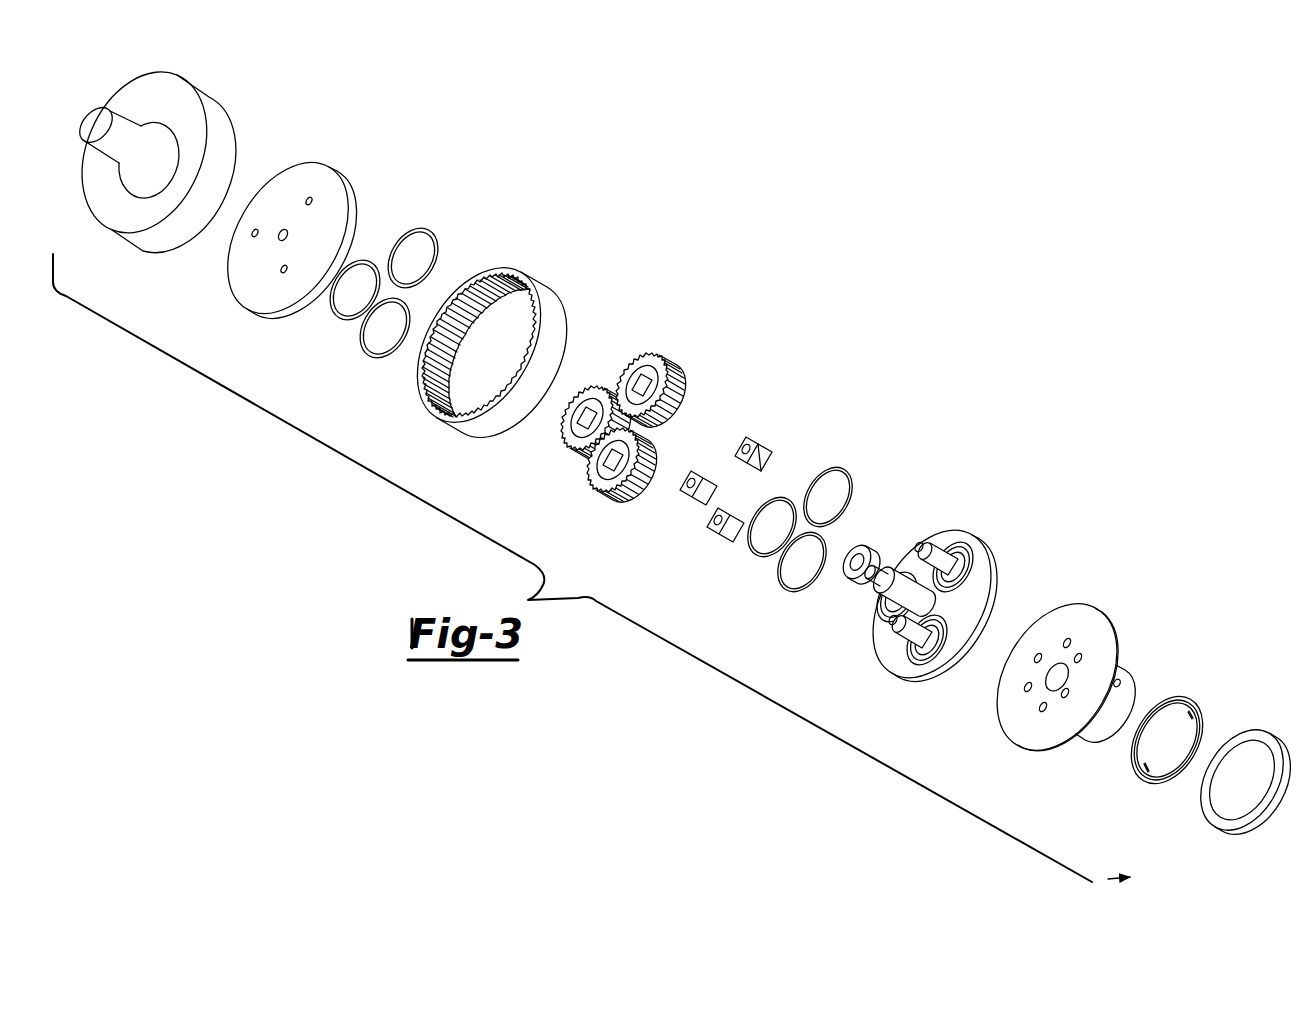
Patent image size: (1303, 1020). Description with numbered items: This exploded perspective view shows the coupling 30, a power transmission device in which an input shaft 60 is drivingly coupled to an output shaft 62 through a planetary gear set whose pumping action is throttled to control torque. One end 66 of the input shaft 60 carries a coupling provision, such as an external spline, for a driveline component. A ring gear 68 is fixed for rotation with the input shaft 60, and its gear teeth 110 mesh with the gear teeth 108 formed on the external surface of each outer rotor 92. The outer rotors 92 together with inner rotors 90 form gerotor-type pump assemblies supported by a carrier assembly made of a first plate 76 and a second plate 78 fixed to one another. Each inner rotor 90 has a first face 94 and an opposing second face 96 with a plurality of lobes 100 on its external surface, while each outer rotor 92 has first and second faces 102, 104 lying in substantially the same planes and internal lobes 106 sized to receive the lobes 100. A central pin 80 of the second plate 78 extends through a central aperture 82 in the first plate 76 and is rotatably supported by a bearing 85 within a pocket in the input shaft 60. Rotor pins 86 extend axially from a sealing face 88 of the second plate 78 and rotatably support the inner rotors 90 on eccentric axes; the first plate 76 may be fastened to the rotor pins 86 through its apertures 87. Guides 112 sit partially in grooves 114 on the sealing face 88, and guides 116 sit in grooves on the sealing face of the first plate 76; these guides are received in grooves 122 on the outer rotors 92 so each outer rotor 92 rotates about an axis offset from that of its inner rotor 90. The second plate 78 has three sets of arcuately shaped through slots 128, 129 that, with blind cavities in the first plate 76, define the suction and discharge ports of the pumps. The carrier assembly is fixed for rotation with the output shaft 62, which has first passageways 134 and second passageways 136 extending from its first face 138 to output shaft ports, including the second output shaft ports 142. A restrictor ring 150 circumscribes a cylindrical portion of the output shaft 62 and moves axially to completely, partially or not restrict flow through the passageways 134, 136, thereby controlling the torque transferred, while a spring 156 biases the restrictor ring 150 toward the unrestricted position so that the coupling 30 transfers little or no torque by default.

The coupling 30 is at (890, 300).
The input shaft 60 is at (167, 139).
The end of input shaft 66 is at (97, 118).
The first plate 76 is at (284, 212).
The central aperture 82 is at (282, 229).
The apertures 87 is at (313, 202).
The guides 116 is at (362, 340).
The ring gear 68 is at (488, 342).
The gear teeth 110 is at (472, 319).
The grooves 122 is at (563, 424).
The outer rotor 92 is at (650, 422).
The first face of outer rotor 102 is at (620, 380).
The second face of outer rotor 104 is at (682, 393).
The internal lobes 106 is at (590, 412).
The gear teeth 108 is at (606, 500).
The inner rotor 90 is at (748, 479).
The first face of inner rotor 94 is at (739, 429).
The second face of inner rotor 96 is at (766, 466).
The lobes 100 is at (748, 488).
The guides 112 is at (840, 465).
The bearing 85 is at (857, 545).
The central pin 80 is at (867, 580).
The rotor pins 86 is at (940, 550).
The first through slots 128 is at (961, 540).
The second through slots 129 is at (896, 605).
The second plate 78 is at (928, 598).
The sealing face 88 is at (973, 585).
The grooves 114 is at (906, 658).
The output shaft 62 is at (1064, 685).
The first passageways 134 is at (1066, 639).
The second passageways 136 is at (1036, 655).
The second output shaft ports 142 is at (1121, 683).
The first face of output shaft 138 is at (1003, 717).
The spring 156 is at (1147, 782).
The restrictor ring 150 is at (1200, 798).